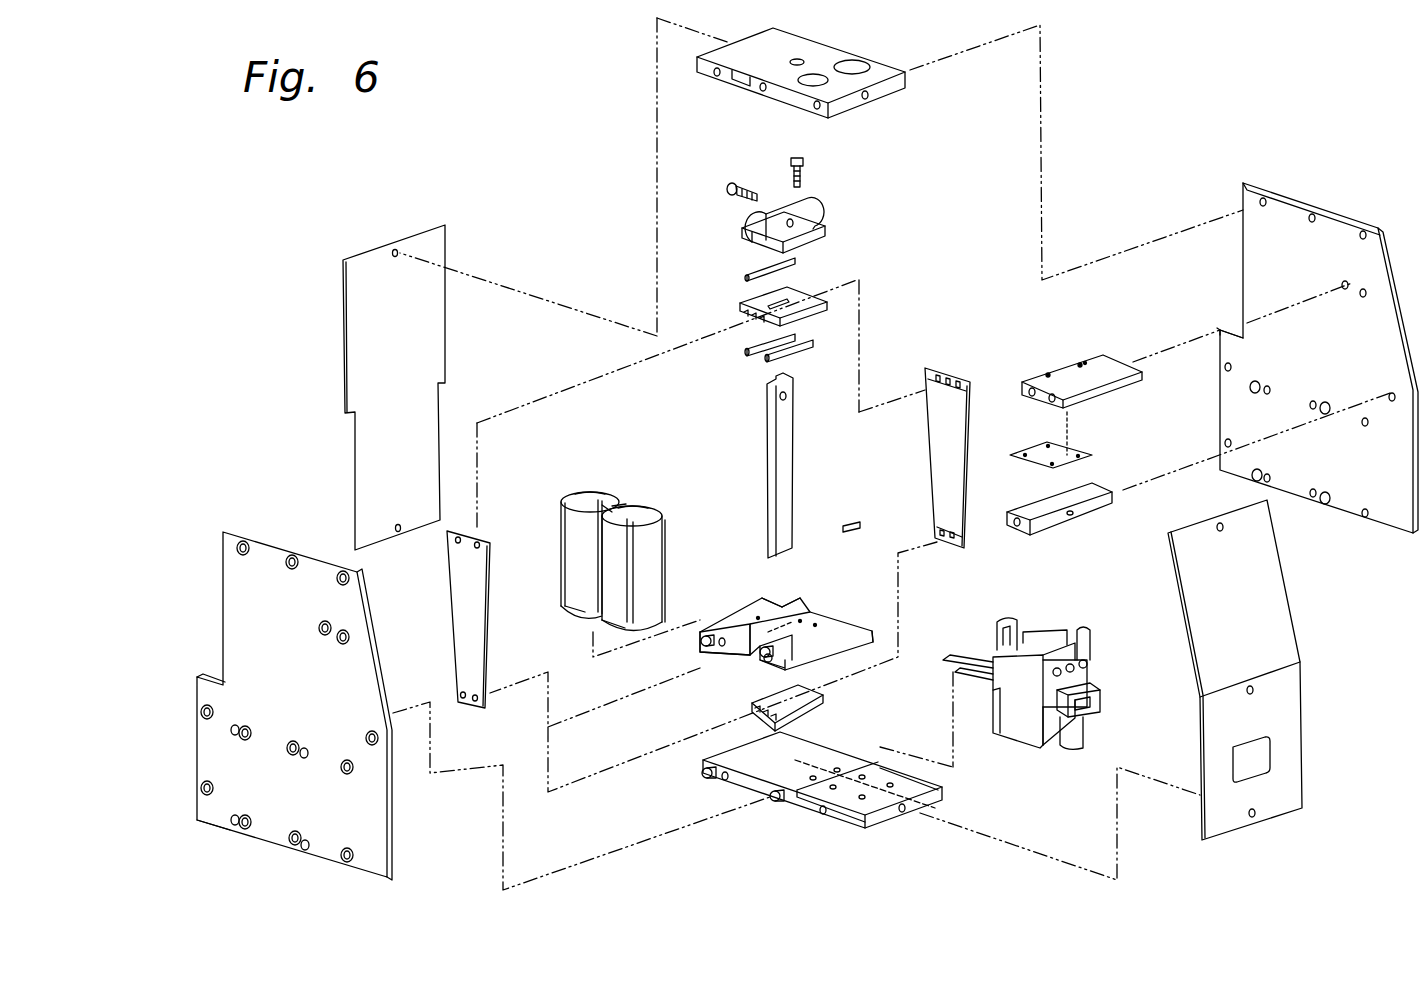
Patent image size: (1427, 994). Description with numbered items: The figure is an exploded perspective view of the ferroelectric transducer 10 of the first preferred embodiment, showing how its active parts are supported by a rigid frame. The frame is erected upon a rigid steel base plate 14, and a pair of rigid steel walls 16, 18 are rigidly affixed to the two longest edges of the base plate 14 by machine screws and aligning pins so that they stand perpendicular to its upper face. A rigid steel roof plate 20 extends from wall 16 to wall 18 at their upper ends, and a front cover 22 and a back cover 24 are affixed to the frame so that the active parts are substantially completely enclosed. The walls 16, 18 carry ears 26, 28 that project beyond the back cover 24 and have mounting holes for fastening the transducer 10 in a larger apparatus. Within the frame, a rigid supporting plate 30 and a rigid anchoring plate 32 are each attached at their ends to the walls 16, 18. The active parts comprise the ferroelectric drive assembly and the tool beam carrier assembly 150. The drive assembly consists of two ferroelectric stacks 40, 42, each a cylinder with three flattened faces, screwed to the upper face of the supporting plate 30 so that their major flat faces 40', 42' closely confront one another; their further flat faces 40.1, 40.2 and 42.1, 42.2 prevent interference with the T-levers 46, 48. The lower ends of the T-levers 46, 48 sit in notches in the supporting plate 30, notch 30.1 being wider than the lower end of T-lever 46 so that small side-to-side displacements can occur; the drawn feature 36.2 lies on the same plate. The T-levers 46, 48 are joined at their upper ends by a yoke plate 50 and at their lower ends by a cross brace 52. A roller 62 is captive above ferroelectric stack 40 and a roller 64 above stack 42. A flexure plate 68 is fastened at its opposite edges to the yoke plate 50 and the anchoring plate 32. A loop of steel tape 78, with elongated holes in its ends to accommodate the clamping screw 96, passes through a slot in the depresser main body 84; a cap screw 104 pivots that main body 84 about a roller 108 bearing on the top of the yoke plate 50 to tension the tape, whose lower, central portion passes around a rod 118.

The ferroelectric transducer 10 is at (1288, 853).
The base plate 14 is at (830, 813).
The wall 16 is at (1302, 363).
The wall 18 is at (291, 672).
The roof plate 20 is at (830, 57).
The front cover 22 is at (1272, 595).
The back cover 24 is at (372, 465).
The ear 26 is at (1230, 347).
The ear 28 is at (203, 812).
The supporting plate 30 is at (873, 592).
The notch 30.1 is at (738, 643).
The anchoring plate 32 is at (1097, 365).
The recess 36.2 is at (823, 580).
The ferroelectric stack 40 is at (564, 533).
The major flat face 40' is at (655, 484).
The flat face 40.1 is at (580, 610).
The flat face 40.2 is at (603, 490).
The ferroelectric stack 42 is at (662, 568).
The major flat face 42' is at (639, 478).
The flat face 42.1 is at (613, 620).
The flat face 42.2 is at (655, 503).
The T-lever 46 is at (470, 607).
The T-lever 48 is at (933, 443).
The yoke plate 50 is at (795, 293).
The cross brace 52 is at (807, 705).
The roller 62 is at (743, 352).
The roller 64 is at (787, 355).
The flexure plate 68 is at (1067, 447).
The steel tape loop 78 is at (788, 453).
The depresser main body 84 is at (805, 213).
The clamping screw 96 is at (732, 186).
The cap screw 104 is at (803, 175).
The roller 108 is at (745, 274).
The rod 118 is at (845, 528).
The tool beam carrier assembly 150 is at (1015, 750).